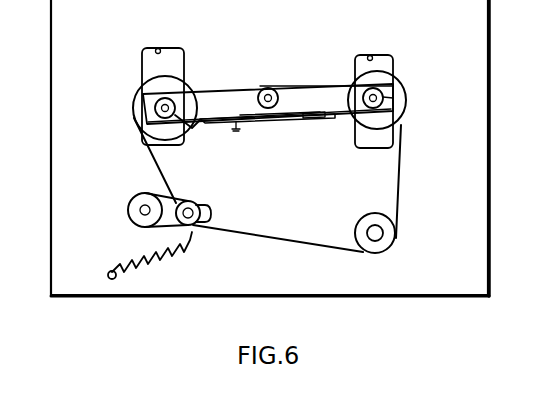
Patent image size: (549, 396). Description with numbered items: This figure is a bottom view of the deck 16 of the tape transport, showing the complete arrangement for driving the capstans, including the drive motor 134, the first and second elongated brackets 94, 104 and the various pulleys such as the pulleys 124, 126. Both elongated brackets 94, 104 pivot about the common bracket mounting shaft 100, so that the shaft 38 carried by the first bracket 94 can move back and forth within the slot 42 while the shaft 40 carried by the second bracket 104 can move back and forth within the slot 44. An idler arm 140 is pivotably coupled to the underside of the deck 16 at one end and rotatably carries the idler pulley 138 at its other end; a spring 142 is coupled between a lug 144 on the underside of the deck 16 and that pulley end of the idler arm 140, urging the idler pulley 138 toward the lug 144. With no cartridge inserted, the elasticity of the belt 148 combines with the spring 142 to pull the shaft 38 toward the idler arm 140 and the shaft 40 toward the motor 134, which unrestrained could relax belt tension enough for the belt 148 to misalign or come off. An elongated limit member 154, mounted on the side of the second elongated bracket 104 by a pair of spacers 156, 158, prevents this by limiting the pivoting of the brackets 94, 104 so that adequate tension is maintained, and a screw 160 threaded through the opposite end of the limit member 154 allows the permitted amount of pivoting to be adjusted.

The deck 16 is at (489, 80).
The shaft 38 is at (183, 123).
The shaft 40 is at (384, 96).
The slot 42 is at (158, 50).
The slot 44 is at (370, 58).
The first elongated bracket 94 is at (205, 90).
The common bracket mounting shaft 100 is at (268, 88).
The second elongated bracket 104 is at (322, 87).
The pulley 124 is at (137, 102).
The pulley 126 is at (401, 100).
The drive motor 134 is at (395, 241).
The idler pulley 138 is at (192, 203).
The idler arm 140 is at (157, 226).
The spring 142 is at (143, 266).
The lug 144 is at (109, 273).
The belt 148 is at (235, 236).
The elongated limit member 154 is at (288, 127).
The spacer 156 is at (320, 130).
The spacer 158 is at (343, 123).
The screw 160 is at (242, 130).